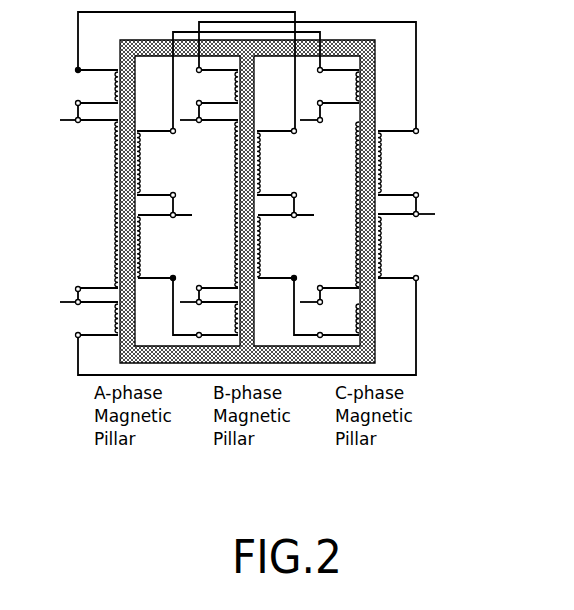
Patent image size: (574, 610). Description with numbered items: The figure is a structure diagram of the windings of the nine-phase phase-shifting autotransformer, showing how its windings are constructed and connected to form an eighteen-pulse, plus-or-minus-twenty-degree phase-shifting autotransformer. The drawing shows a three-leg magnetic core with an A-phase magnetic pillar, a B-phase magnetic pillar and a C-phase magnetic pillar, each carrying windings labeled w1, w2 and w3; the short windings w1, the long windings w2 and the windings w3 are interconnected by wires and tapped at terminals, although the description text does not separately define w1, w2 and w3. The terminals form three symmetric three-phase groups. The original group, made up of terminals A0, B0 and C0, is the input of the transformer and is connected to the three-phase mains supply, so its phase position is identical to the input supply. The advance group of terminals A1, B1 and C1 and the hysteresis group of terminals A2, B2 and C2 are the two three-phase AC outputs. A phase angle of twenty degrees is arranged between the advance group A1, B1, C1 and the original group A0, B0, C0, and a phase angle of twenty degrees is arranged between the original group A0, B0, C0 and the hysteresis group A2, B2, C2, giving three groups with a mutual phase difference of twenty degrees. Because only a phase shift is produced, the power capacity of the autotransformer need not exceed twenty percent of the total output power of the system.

The original group A-phase terminal A0 is at (168, 209).
The advance group A-phase terminal A1 is at (191, 296).
The hysteresis group A-phase terminal A2 is at (311, 114).
The original group B-phase terminal B0 is at (288, 209).
The advance group B-phase terminal B1 is at (311, 296).
The hysteresis group B-phase terminal B2 is at (70, 114).
The original group C-phase terminal C0 is at (425, 208).
The advance group C-phase terminal C1 is at (70, 295).
The hysteresis group C-phase terminal C2 is at (191, 114).
The first winding w1 is at (221, 202).
The second winding w2 is at (222, 204).
The third winding w3 is at (273, 205).